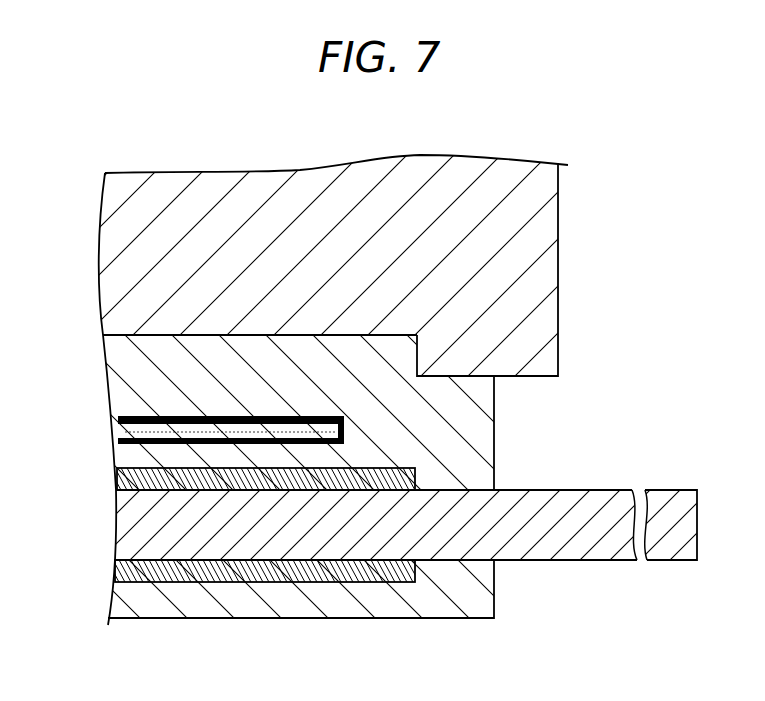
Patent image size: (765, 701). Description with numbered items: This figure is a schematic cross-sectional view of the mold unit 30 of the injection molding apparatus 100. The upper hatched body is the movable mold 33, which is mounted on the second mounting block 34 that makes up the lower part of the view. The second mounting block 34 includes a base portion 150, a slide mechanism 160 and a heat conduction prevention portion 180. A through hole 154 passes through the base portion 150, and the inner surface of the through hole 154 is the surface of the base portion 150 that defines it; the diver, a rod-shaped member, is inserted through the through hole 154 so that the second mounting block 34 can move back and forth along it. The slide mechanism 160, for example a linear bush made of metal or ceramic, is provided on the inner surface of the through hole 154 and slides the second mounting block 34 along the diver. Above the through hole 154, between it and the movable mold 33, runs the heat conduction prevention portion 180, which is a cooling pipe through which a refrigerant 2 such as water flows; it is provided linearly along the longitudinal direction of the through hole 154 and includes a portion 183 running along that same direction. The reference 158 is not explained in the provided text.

The injection molding apparatus 100 is at (588, 133).
The mold unit 30 is at (584, 180).
The movable mold 33 is at (558, 262).
The second mounting block 34 is at (548, 430).
The base portion 150 is at (470, 444).
The through hole 154 is at (484, 557).
The wiring layer 158 is at (145, 530).
The slide mechanism 160 is at (118, 571).
The heat conduction prevention portion 180 is at (116, 418).
The portion along the longitudinal direction of the through hole 183 is at (116, 441).
The refrigerant 2 is at (245, 430).